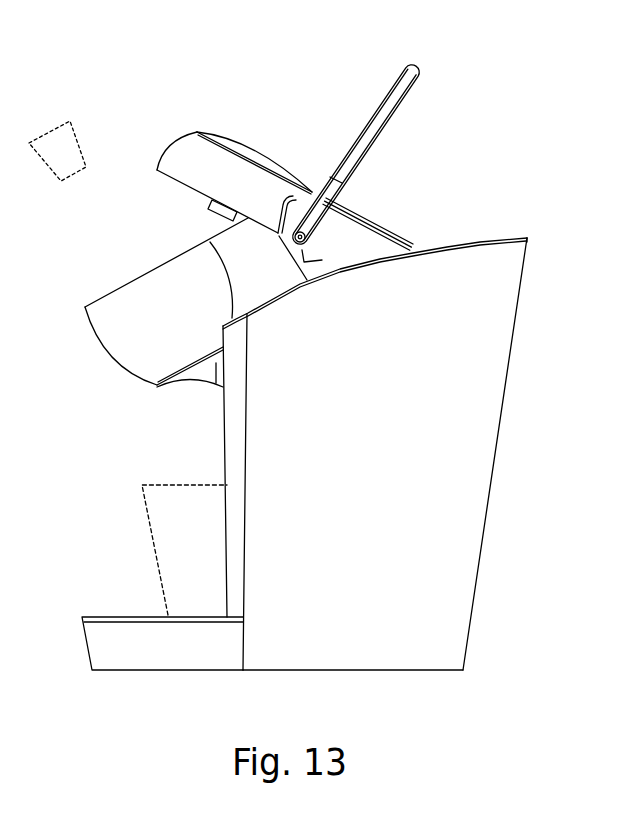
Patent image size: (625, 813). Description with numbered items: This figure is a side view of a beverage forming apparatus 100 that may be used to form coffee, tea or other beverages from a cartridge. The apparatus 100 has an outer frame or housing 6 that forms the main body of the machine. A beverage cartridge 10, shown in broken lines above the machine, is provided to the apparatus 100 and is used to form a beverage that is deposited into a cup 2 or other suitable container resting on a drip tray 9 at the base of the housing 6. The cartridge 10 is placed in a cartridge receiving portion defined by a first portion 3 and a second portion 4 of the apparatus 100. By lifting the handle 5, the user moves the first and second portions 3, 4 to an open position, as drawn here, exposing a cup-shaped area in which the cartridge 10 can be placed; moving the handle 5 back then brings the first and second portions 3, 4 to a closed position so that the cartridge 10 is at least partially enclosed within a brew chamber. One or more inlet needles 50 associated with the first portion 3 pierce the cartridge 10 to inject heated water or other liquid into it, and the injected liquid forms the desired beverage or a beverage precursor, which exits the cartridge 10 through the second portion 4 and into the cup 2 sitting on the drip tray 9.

The beverage forming apparatus 100 is at (520, 92).
The cup 2 is at (158, 563).
The first portion 3 is at (228, 160).
The second portion 4 is at (118, 330).
The handle 5 is at (398, 110).
The housing 6 is at (507, 378).
The drip tray 9 is at (97, 617).
The beverage cartridge 10 is at (80, 144).
The inlet needle 50 is at (220, 214).